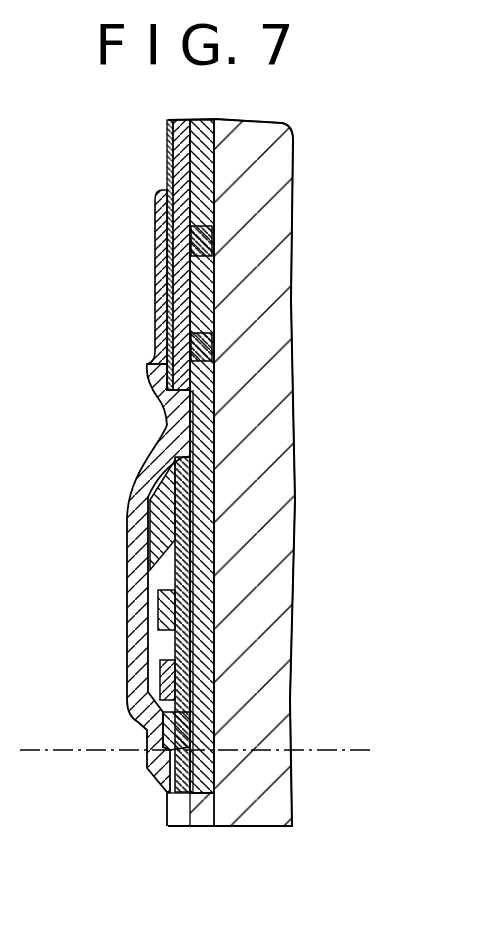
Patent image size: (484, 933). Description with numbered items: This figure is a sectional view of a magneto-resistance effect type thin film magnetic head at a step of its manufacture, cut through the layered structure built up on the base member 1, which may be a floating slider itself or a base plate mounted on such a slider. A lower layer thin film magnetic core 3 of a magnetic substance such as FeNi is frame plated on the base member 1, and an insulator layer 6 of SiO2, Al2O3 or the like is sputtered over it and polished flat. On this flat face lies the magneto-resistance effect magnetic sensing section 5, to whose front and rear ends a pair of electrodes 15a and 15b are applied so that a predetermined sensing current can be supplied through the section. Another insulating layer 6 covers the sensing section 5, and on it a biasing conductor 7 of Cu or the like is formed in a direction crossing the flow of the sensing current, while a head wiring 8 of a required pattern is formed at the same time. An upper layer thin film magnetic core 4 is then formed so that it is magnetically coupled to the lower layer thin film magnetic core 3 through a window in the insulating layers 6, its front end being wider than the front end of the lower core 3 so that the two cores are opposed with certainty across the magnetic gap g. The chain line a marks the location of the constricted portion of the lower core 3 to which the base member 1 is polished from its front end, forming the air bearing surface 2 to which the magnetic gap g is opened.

The base member 1 is at (294, 601).
The air bearing surface 2 is at (203, 828).
The lower layer thin film magnetic core 3 is at (212, 483).
The upper layer thin film magnetic core 4 is at (142, 643).
The magneto-resistance effect magnetic sensing section 5 is at (195, 683).
The insulator layer 6 is at (205, 252).
The biasing conductor 7 is at (170, 680).
The head wiring 8 is at (205, 341).
The electrode 15a is at (160, 733).
The electrode 15b is at (163, 610).
The chain line a is at (70, 760).
The magnetic gap g is at (165, 793).